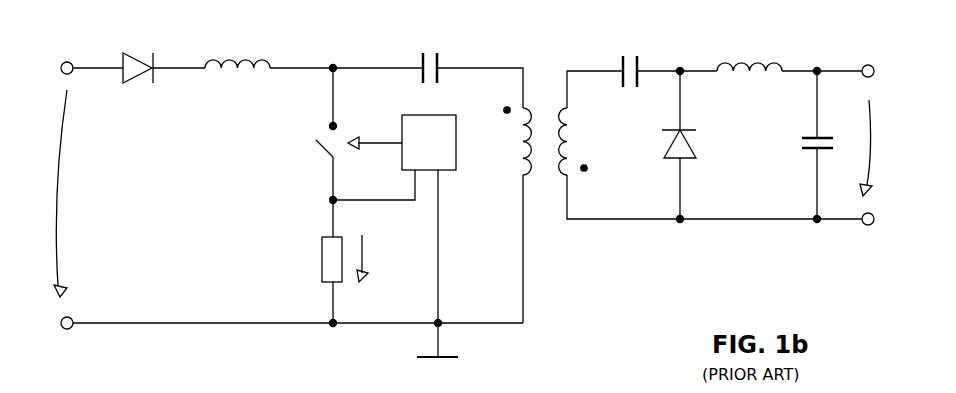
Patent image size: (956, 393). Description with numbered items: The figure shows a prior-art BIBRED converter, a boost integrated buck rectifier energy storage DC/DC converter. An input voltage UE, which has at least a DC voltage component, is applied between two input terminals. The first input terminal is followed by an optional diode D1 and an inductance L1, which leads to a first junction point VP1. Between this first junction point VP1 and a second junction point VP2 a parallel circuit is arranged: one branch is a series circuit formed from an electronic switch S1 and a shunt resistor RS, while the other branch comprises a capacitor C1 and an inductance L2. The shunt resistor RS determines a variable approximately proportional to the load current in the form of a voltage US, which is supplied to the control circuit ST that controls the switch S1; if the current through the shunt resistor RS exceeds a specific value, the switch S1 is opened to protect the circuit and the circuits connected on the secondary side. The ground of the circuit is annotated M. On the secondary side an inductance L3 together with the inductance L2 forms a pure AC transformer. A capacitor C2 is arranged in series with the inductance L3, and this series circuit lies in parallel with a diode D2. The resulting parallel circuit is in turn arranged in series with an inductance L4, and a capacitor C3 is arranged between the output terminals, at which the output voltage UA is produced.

The diode D1 is at (139, 49).
The inductance L1 is at (237, 41).
The first junction point VP1 is at (334, 80).
The capacitor C1 is at (432, 51).
The electronic switch S1 is at (315, 173).
The control circuit ST is at (394, 219).
The inductance L2 is at (509, 141).
The inductance L3 is at (584, 141).
The capacitor C2 is at (628, 54).
The inductance L4 is at (749, 43).
The diode D2 is at (700, 145).
The capacitor C3 is at (798, 145).
The output voltage UA is at (889, 148).
The input voltage UE is at (79, 193).
The shunt resistor RS is at (309, 280).
The voltage US is at (382, 258).
The second junction point VP2 is at (331, 354).
The ground M is at (453, 347).